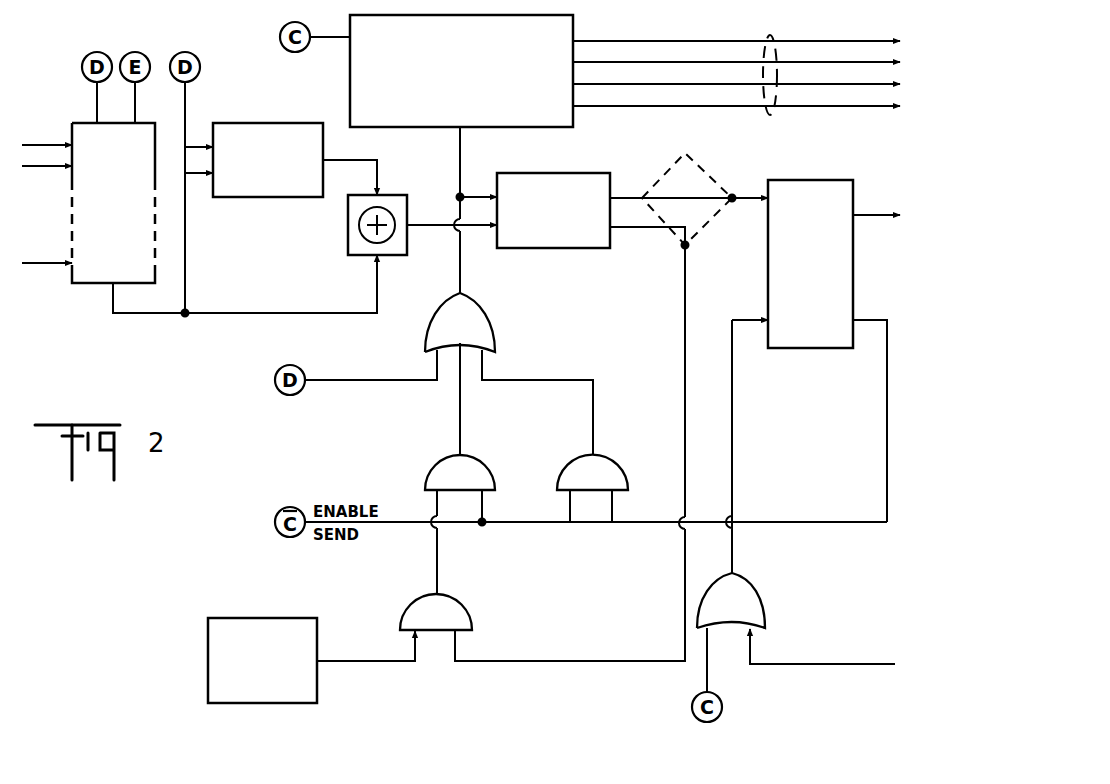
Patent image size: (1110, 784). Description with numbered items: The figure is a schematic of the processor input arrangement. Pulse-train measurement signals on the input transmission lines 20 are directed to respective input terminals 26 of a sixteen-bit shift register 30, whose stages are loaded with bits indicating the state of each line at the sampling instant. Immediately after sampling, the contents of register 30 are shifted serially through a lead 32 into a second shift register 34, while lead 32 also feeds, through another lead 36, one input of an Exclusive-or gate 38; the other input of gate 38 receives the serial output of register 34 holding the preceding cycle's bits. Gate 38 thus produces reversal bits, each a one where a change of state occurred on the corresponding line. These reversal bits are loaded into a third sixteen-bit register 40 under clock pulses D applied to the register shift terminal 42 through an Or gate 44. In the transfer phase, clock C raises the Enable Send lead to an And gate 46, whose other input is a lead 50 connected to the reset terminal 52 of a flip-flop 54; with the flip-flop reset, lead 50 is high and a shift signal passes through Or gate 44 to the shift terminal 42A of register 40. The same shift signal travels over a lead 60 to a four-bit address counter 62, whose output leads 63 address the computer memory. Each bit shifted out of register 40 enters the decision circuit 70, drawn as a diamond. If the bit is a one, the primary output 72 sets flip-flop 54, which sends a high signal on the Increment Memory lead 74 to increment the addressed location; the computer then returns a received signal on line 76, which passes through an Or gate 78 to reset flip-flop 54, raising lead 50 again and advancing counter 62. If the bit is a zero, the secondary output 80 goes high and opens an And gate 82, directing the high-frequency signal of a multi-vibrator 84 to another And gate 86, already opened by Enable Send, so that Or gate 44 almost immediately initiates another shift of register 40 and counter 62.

The input transmission lines 20 is at (33, 132).
The input terminals 26 is at (69, 140).
The shift register 30 is at (84, 286).
The lead 32 is at (185, 222).
The second shift register 34 is at (255, 123).
The lead 36 is at (273, 313).
The Exclusive-or gate 38 is at (348, 224).
The third 16-bit register 40 is at (545, 173).
The register shift terminal 42 is at (492, 235).
The shift terminal 42A is at (494, 191).
The Or gate 44 is at (486, 312).
The And gate 46 is at (617, 464).
The lead 50 is at (648, 523).
The reset terminal 52 is at (856, 316).
The flip-flop 54 is at (802, 180).
The lead 60 is at (460, 150).
The four-bit address counter 62 is at (575, 30).
The output leads 63 is at (775, 38).
The decision circuit 70 is at (672, 163).
The primary output 72 is at (733, 194).
The Increment Memory lead 74 is at (870, 213).
The line 76 is at (836, 664).
The Or gate 78 is at (752, 592).
The secondary output 80 is at (683, 247).
The And gate 82 is at (456, 601).
The multi-vibrator 84 is at (237, 618).
The And gate 86 is at (487, 463).